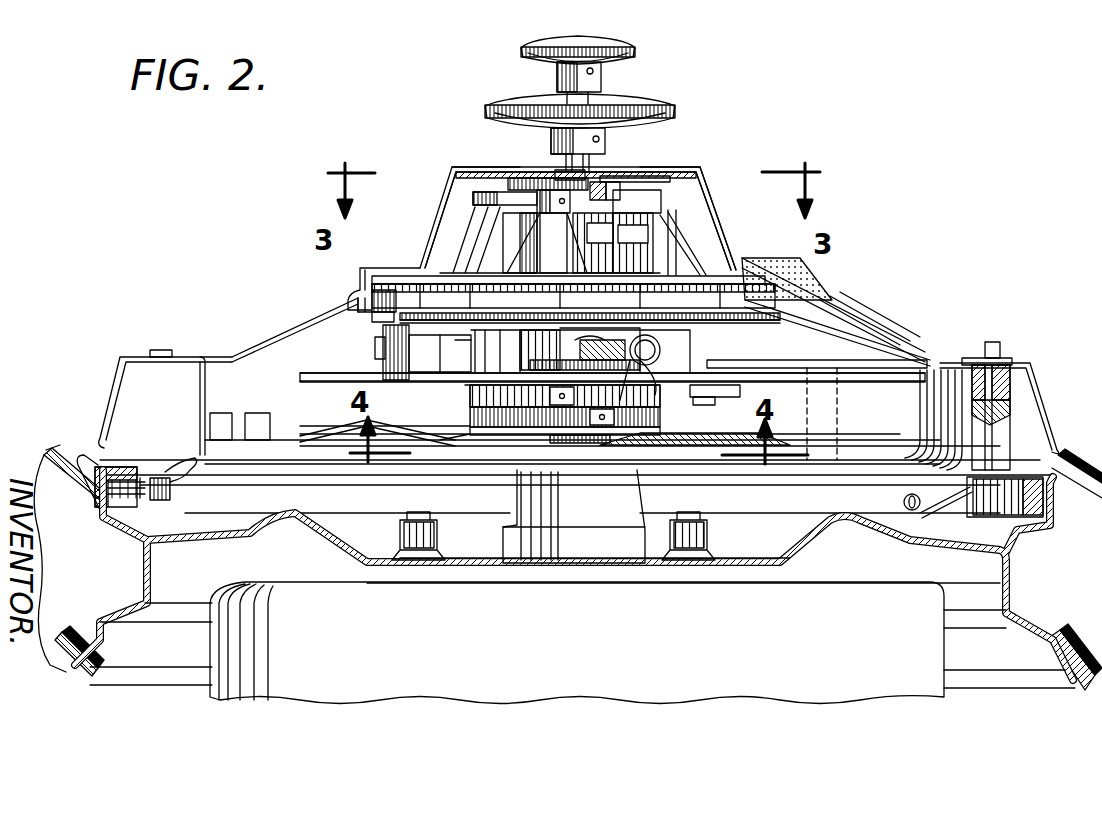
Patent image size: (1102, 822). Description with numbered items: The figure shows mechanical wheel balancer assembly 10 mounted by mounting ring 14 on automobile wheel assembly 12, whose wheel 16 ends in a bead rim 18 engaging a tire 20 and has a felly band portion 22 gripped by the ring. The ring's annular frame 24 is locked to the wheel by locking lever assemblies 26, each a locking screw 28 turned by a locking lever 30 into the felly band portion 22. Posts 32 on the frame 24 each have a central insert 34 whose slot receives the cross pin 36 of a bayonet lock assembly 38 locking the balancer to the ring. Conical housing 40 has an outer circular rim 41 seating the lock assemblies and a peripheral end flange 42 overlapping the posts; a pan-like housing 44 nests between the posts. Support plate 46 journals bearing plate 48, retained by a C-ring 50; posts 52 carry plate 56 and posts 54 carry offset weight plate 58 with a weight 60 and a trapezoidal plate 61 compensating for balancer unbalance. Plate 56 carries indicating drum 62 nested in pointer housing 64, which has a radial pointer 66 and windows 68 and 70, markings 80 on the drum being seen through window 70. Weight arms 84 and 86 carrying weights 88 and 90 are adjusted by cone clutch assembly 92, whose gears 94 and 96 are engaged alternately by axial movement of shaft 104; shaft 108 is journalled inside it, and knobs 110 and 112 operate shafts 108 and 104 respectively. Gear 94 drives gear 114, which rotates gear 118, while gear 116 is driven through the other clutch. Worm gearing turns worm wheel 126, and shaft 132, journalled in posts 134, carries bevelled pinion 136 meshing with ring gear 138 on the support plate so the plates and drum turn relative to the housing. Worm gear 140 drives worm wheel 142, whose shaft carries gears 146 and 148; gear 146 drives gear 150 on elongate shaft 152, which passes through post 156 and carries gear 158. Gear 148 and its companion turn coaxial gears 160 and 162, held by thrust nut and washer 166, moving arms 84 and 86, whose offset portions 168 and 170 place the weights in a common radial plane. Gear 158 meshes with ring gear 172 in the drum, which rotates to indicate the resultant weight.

The mechanical wheel balancer assembly 10 is at (905, 302).
The automobile wheel assembly 12 is at (40, 440).
The mounting ring 14 is at (152, 512).
The wheel 16 is at (792, 542).
The bead rim 18 is at (1088, 458).
The tire 20 is at (62, 456).
The circumferential felly band portion 22 is at (108, 505).
The annular frame 24 is at (498, 520).
The locking lever assembly 26 is at (148, 460).
The locking screw 28 is at (96, 506).
The locking lever 30 is at (1015, 469).
The post 32 is at (1010, 445).
The central insert 34 is at (1006, 390).
The cross pin 36 is at (1010, 412).
The spring biased bayonet type lock assembly 38 is at (1000, 340).
The conical shaped housing 40 is at (304, 322).
The outer circular rim 41 is at (220, 356).
The peripheral end flange 42 is at (114, 386).
The second pan-like housing 44 is at (832, 430).
The support plate 46 is at (376, 314).
The bearing plate 48 is at (715, 284).
The C-ring 50 is at (430, 278).
The post 52 is at (480, 220).
The post 54 is at (486, 377).
The plate 56 is at (470, 166).
The weight plate 58 is at (750, 396).
The weight 60 is at (882, 364).
The trapezoidally shaped plate 61 is at (703, 404).
The indicating drum 62 is at (434, 220).
The pointer housing 64 is at (442, 186).
The pointer 66 is at (858, 303).
The window 68 is at (733, 232).
The window 70 is at (700, 166).
The marking 80 is at (708, 168).
The adjustable weight arm 84 is at (468, 426).
The adjustable weight arm 86 is at (432, 418).
The weight 88 is at (227, 413).
The weight 90 is at (268, 420).
The cone clutch assembly 92 is at (625, 176).
The gear 94 is at (585, 208).
The gear 96 is at (584, 260).
The shaft 104 is at (563, 160).
The shaft 108 is at (566, 90).
The knob 110 is at (530, 42).
The knob 112 is at (490, 110).
The gear 114 is at (637, 212).
The gear 116 is at (633, 243).
The gear 118 is at (505, 232).
The worm wheel 126 is at (685, 316).
The shaft 132 is at (458, 370).
The post 134 is at (540, 420).
The bevelled pinion gear 136 is at (393, 371).
The bevelled ring gear 138 is at (742, 322).
The double-threaded worm gear 140 is at (660, 362).
The worm wheel 142 is at (653, 396).
The gear 146 is at (585, 353).
The gear 148 is at (575, 438).
The gear 150 is at (522, 372).
The elongate shaft 152 is at (556, 328).
The post 156 is at (558, 250).
The gear 158 is at (598, 175).
The gear 160 is at (486, 396).
The gear 162 is at (504, 413).
The thrust nut and washer 166 is at (642, 448).
The offset portion 168 is at (382, 436).
The offset portion 170 is at (345, 430).
The ring gear 172 is at (505, 180).